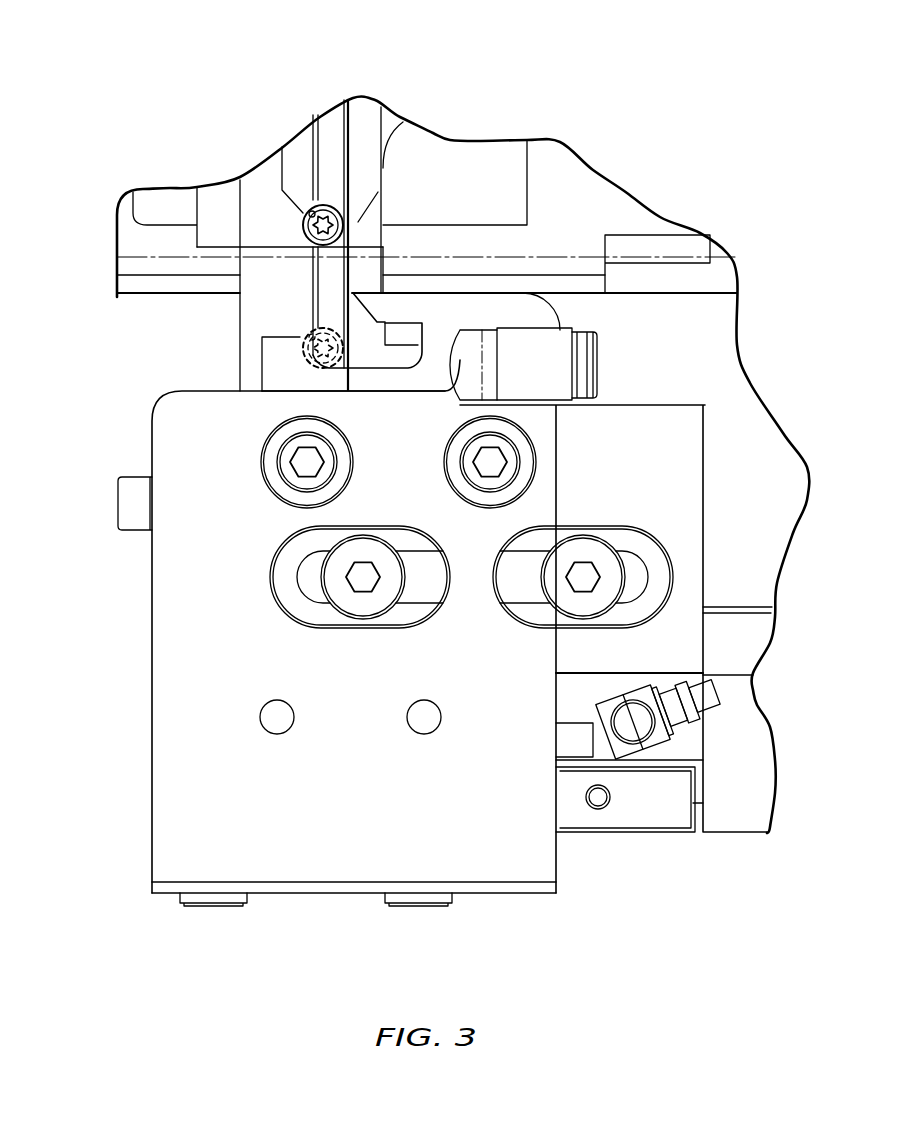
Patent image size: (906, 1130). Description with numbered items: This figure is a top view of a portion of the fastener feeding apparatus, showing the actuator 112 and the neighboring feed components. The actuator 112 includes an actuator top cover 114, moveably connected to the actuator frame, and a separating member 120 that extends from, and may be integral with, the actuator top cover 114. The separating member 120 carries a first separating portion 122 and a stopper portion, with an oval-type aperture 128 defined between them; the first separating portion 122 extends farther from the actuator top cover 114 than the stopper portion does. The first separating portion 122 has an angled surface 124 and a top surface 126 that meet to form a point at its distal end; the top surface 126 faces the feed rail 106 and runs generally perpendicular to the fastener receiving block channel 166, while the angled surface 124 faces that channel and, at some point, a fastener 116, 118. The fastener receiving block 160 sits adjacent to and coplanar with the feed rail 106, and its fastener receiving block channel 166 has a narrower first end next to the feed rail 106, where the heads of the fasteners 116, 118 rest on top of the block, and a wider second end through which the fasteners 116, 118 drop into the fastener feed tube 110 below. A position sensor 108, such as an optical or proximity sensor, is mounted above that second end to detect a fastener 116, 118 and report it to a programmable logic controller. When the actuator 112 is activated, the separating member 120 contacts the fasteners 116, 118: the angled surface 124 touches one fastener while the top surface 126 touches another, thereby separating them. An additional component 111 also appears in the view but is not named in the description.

The feed rail 106 is at (403, 110).
The position sensor 108 is at (258, 275).
The fastener feed tube 110 is at (300, 350).
The fitting 111 is at (527, 353).
The actuator 112 is at (145, 440).
The actuator top cover 114 is at (173, 800).
The fastener 116 is at (313, 365).
The fastener 118 is at (328, 210).
The separating member 120 is at (298, 308).
The first separating portion 122 is at (360, 283).
The angled surface 124 is at (402, 322).
The top surface 126 is at (372, 280).
The aperture 128 is at (392, 316).
The fastener receiving block 160 is at (245, 237).
The fastener receiving block channel 166 is at (335, 318).